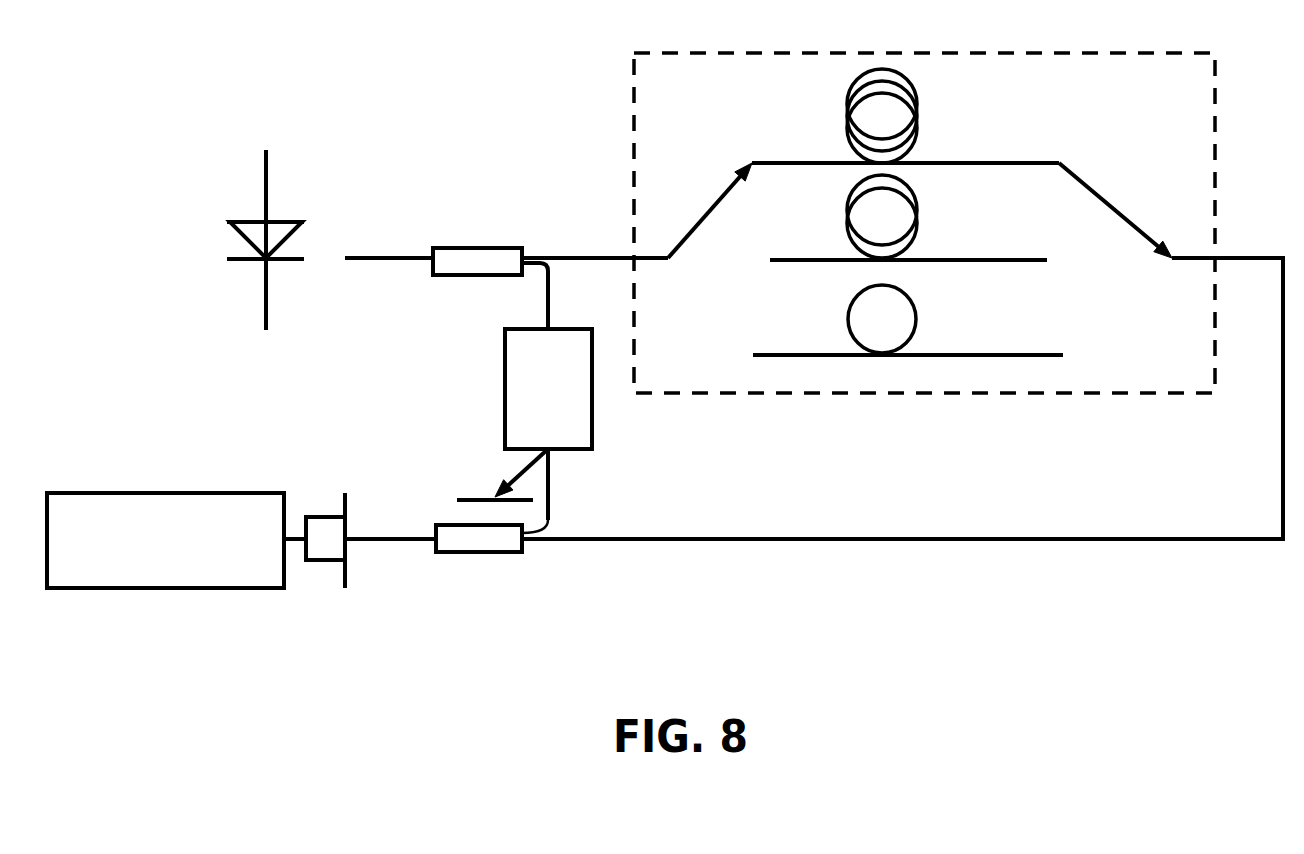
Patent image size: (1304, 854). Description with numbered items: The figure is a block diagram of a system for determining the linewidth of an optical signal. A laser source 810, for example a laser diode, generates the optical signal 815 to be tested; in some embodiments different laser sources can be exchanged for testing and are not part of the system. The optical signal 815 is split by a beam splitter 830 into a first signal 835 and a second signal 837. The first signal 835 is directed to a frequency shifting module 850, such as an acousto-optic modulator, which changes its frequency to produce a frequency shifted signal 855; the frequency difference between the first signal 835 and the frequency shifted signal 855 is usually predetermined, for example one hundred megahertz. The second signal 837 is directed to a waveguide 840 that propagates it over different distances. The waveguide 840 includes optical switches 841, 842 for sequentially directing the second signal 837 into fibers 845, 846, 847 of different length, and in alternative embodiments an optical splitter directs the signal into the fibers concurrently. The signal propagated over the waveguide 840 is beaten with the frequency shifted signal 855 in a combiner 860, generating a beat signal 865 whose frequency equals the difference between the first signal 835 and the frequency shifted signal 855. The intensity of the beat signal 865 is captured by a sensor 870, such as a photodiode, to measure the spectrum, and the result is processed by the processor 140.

The processor 140 is at (120, 493).
The laser source 810 is at (292, 222).
The optical signal 815 is at (363, 260).
The beam splitter 830 is at (462, 248).
The first signal 835 is at (583, 283).
The second signal 837 is at (583, 257).
The waveguide 840 is at (633, 90).
The optical switch 841 is at (693, 234).
The optical switch 842 is at (1100, 193).
The fiber 845 is at (793, 353).
The fiber 846 is at (782, 257).
The fiber 847 is at (785, 162).
The frequency shifting module 850 is at (505, 348).
The frequency shifted signal 855 is at (552, 497).
The combiner 860 is at (473, 555).
The beat signal 865 is at (380, 542).
The sensor 870 is at (345, 520).